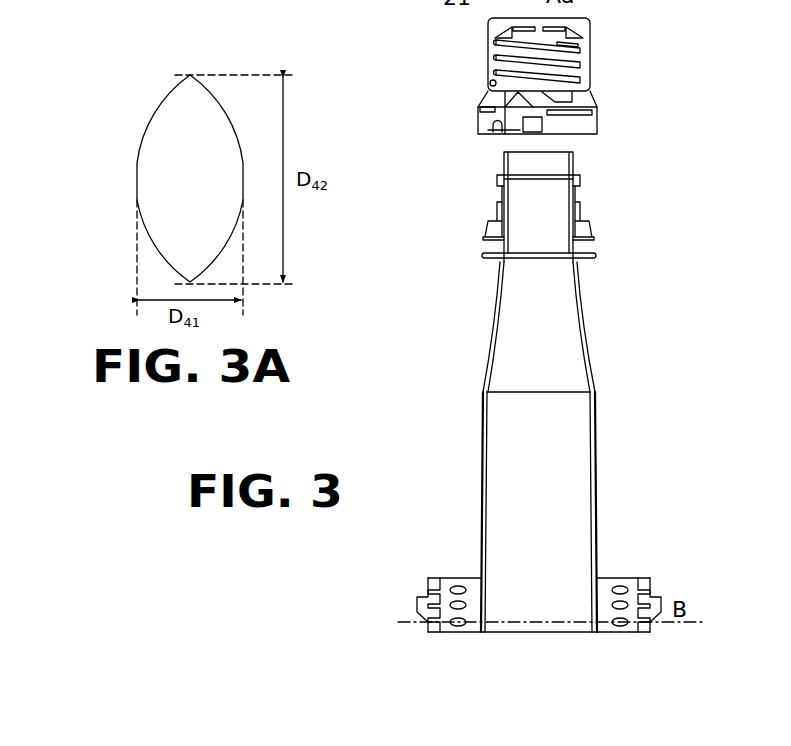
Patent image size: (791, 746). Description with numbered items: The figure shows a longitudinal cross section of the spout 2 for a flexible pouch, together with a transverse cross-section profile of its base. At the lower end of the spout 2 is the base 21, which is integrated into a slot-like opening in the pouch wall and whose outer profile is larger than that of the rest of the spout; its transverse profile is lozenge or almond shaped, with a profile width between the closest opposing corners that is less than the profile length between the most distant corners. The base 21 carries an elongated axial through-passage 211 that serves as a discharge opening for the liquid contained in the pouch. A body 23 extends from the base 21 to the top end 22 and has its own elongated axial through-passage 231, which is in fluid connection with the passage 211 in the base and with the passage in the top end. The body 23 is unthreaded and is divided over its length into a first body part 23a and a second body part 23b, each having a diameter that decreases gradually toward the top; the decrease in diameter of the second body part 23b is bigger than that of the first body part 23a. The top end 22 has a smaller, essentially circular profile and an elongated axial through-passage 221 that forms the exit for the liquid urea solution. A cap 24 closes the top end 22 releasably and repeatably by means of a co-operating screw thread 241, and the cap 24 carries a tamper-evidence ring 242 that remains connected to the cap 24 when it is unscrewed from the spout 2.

In FIG. 3, the spout 2 is at (393, 93).
In FIG. 3A, the base 21 is at (147, 137).
In FIG. 3, the base 21 is at (492, 605).
In FIG. 3, the top end 22 is at (581, 207).
In FIG. 3, the elongated axial through-passage of the top end 221 is at (541, 213).
In FIG. 3, the body 23 is at (599, 447).
In FIG. 3, the first body part 23a is at (550, 307).
In FIG. 3, the second body part 23b is at (599, 512).
In FIG. 3, the elongated axial through-passage of the body 231 is at (533, 477).
In FIG. 3, the elongated axial through-passage of the base 211 is at (539, 609).
In FIG. 3, the cap 24 is at (594, 72).
In FIG. 3, the screw thread of the cap 241 is at (578, 52).
In FIG. 3, the tamper-evidence ring 242 is at (582, 126).